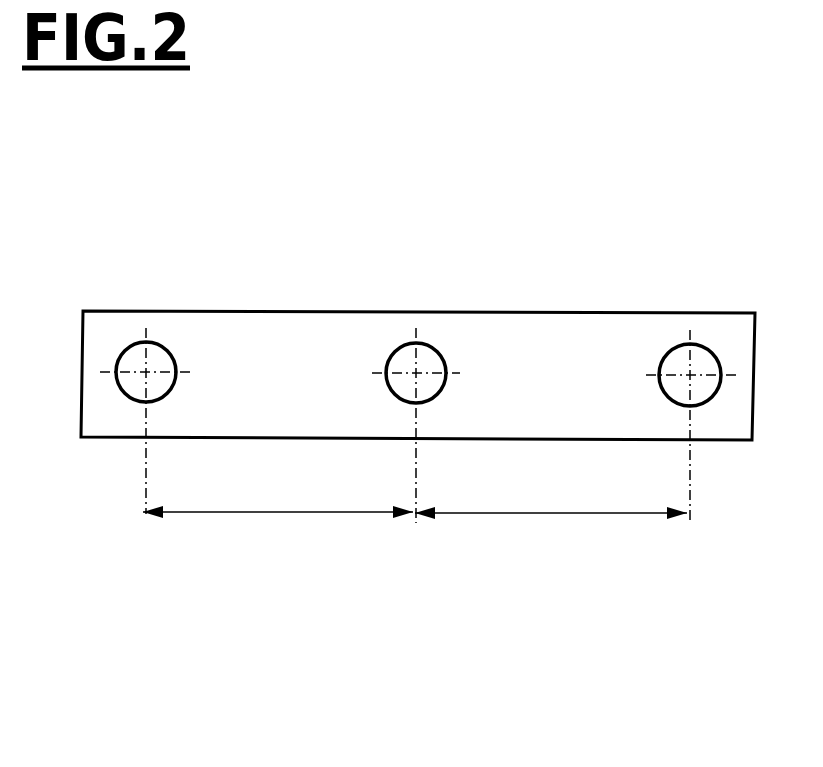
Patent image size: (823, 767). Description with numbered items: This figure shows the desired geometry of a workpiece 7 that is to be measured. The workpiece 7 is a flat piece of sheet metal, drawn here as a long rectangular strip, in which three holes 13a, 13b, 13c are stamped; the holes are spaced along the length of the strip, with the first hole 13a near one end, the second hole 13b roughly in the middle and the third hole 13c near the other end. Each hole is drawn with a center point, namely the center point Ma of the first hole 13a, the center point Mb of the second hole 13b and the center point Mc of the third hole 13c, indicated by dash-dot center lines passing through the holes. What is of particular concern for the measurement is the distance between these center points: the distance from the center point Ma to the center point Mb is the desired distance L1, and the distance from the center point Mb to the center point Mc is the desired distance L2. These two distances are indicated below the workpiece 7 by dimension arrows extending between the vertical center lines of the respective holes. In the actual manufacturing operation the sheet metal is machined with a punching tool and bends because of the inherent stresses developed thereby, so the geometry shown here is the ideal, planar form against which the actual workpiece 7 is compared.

The workpiece 7 is at (268, 330).
The hole 13a is at (122, 347).
The hole 13b is at (442, 352).
The hole 13c is at (717, 357).
The center point Ma is at (145, 370).
The center point Mb is at (413, 367).
The center point Mc is at (688, 373).
The desired distance L1des L1 is at (278, 491).
The desired distance L2des L2 is at (551, 491).